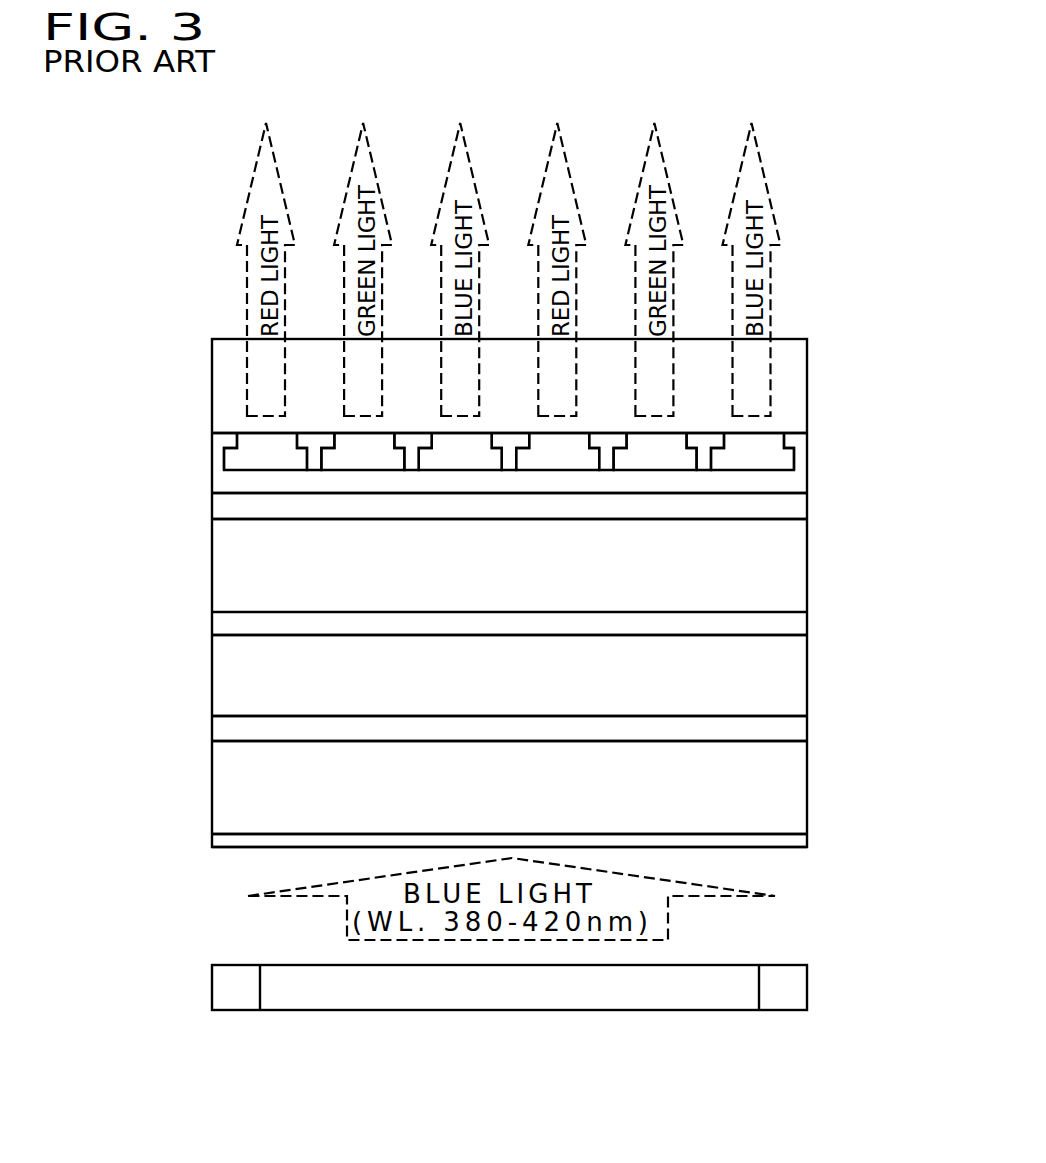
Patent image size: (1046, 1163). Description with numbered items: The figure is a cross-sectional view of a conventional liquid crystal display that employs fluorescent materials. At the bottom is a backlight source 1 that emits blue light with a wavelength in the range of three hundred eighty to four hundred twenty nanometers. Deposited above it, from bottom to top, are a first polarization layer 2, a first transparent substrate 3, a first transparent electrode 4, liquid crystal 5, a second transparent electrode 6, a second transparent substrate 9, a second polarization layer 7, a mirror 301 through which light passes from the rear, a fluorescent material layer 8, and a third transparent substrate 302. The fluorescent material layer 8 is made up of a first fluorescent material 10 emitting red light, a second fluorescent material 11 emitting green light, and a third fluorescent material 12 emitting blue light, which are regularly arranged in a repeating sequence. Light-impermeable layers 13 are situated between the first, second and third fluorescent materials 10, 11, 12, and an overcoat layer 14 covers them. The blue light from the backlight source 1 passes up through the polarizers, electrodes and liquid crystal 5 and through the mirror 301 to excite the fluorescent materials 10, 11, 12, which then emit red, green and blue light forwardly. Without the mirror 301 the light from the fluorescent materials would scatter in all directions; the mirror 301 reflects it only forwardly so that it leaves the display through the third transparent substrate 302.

The backlight source 1 is at (290, 975).
The first polarization layer 2 is at (220, 839).
The first transparent substrate 3 is at (228, 792).
The first transparent electrode 4 is at (228, 727).
The liquid crystal 5 is at (228, 678).
The second transparent electrode 6 is at (228, 622).
The second polarization layer 7 is at (792, 510).
The fluorescent material layer 8 is at (815, 433).
The second transparent substrate 9 is at (785, 588).
The first fluorescent material 10 is at (272, 455).
The second fluorescent material 11 is at (367, 455).
The third fluorescent material 12 is at (458, 455).
The light-impermeable layers 13 is at (230, 441).
The overcoat layer 14 is at (243, 486).
The mirror 301 is at (223, 510).
The third transparent substrate 302 is at (787, 393).